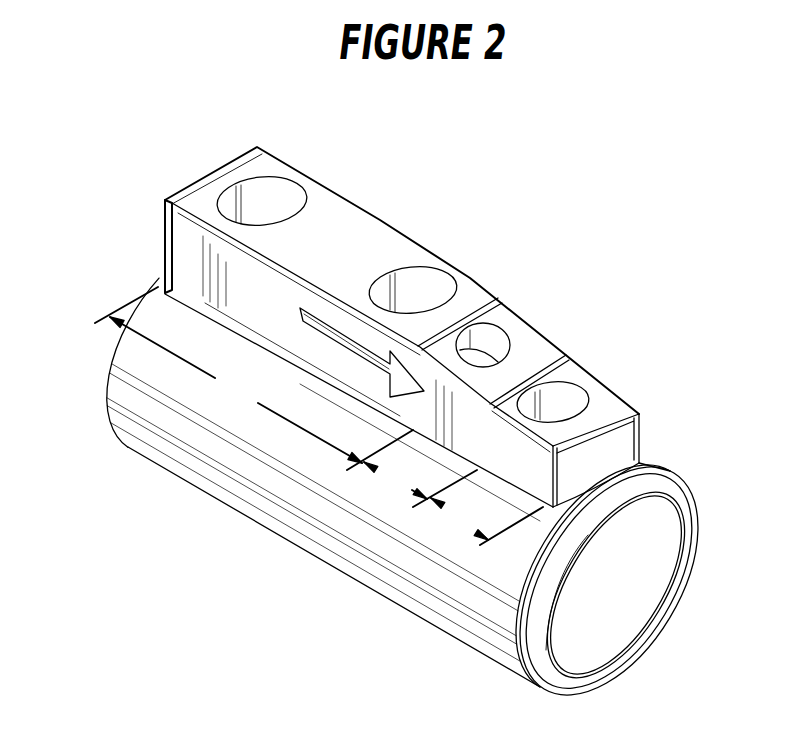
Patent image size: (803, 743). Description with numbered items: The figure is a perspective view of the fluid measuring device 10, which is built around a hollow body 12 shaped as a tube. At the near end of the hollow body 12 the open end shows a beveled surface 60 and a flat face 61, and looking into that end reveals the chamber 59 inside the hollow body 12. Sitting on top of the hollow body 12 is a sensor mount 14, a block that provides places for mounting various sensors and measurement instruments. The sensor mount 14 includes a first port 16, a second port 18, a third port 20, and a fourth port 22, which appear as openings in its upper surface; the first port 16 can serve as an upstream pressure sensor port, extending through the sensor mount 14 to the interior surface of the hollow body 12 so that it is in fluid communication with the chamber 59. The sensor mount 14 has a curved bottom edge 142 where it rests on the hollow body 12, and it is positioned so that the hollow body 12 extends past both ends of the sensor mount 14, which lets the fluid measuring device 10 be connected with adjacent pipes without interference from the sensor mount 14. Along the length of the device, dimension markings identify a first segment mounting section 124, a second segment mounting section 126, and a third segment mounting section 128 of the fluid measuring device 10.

The fluid measuring device 10 is at (88, 592).
The hollow body 12 is at (292, 526).
The sensor mount 14 is at (163, 241).
The first port 16 is at (264, 164).
The second port 18 is at (417, 258).
The third port 20 is at (503, 318).
The fourth port 22 is at (568, 378).
The chamber 59 is at (654, 622).
The beveled surface 60 is at (690, 506).
The flat face 61 is at (694, 552).
The first segment mounting section 124 is at (254, 378).
The second segment mounting section 126 is at (420, 484).
The third segment mounting section 128 is at (487, 521).
The curved bottom edge 142 is at (610, 470).